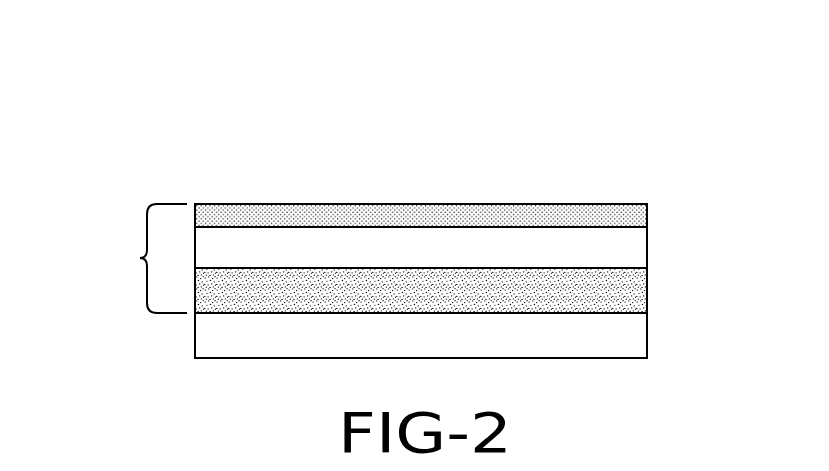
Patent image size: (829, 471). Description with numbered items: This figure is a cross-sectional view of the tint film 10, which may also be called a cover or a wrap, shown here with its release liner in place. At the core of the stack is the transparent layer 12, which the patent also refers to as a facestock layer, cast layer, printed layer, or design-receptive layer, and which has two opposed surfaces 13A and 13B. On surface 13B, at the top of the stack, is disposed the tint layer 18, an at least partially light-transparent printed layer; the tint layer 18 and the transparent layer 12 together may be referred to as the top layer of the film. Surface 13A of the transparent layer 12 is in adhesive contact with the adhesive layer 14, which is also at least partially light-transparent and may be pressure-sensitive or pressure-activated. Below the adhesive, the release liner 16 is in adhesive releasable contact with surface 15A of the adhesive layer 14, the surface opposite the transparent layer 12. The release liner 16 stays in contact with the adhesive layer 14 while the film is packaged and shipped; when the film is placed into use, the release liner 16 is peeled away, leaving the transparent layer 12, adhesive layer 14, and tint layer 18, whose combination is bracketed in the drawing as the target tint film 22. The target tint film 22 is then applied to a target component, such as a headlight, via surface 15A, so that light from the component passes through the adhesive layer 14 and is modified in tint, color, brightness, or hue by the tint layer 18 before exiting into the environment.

The tint film 10 is at (224, 132).
The transparent layer 12 is at (612, 250).
The surface of transparent layer 13A is at (278, 268).
The surface of transparent layer 13B is at (432, 227).
The adhesive layer 14 is at (593, 282).
The surface of adhesive layer 15A is at (322, 313).
The release liner 16 is at (620, 335).
The tint layer 18 is at (590, 213).
The target tint film 22 is at (140, 258).